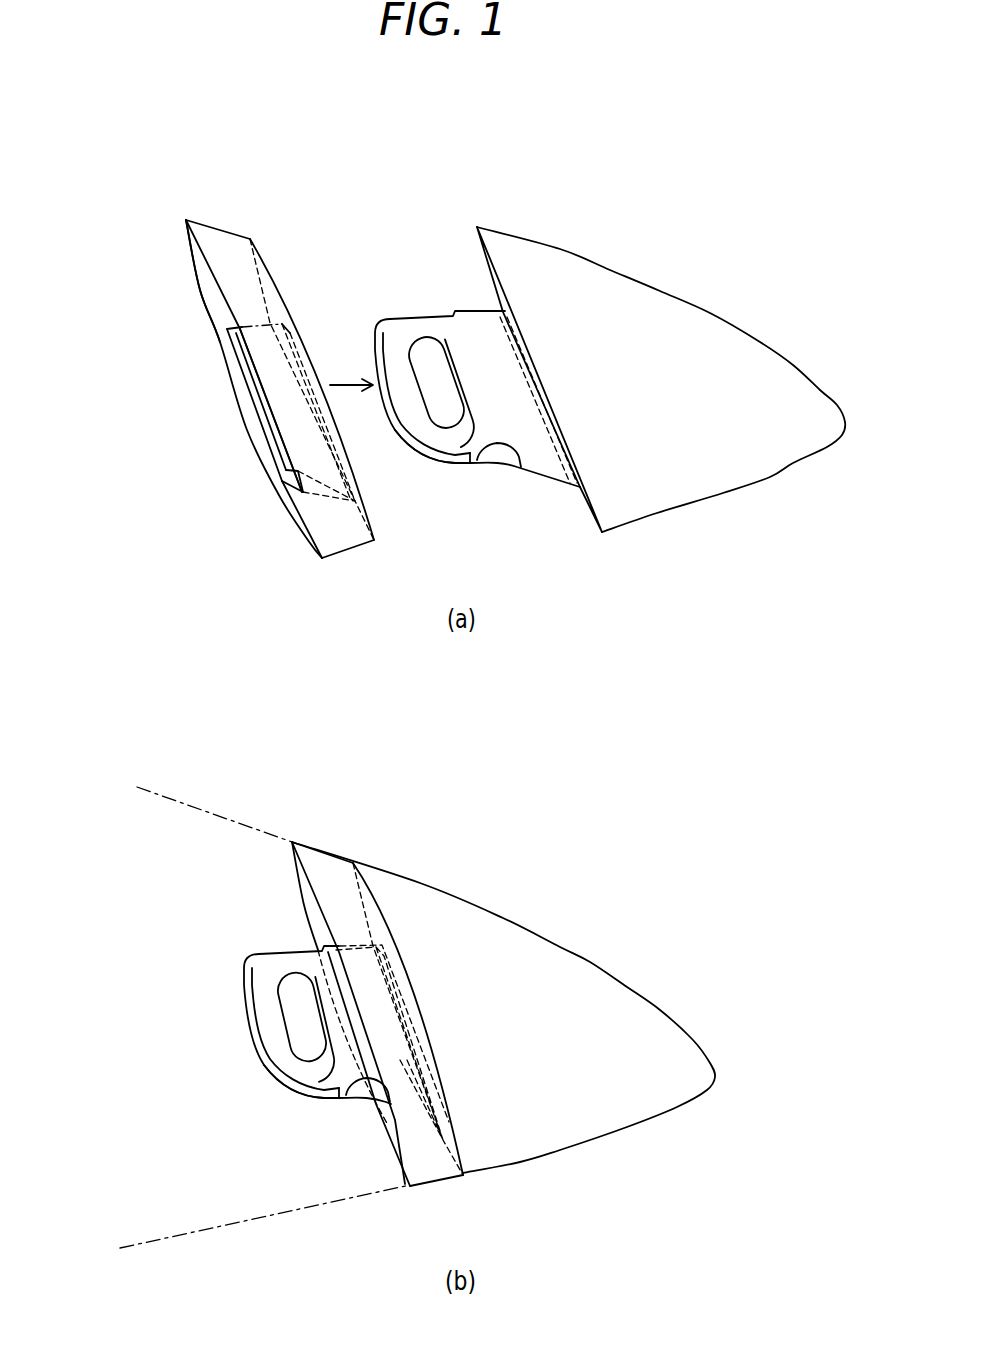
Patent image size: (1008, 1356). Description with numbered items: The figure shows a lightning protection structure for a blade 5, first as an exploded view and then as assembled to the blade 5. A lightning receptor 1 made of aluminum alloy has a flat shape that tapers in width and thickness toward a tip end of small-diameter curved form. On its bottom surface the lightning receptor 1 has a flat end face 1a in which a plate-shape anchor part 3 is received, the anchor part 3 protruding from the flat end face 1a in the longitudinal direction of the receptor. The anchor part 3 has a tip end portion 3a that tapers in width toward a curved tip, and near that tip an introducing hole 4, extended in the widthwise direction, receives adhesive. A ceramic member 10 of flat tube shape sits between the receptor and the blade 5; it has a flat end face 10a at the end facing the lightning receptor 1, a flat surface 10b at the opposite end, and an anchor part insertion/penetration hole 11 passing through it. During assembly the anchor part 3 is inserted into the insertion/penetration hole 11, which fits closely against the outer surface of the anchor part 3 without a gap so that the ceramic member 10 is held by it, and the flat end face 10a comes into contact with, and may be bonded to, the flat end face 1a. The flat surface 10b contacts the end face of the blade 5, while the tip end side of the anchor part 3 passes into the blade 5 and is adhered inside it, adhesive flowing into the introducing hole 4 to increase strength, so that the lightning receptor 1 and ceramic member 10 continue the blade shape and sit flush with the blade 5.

The lightning receptor 1 is at (708, 255).
The flat end face 1a is at (480, 275).
The anchor part 3 is at (478, 308).
The tip end portion 3a is at (444, 452).
The introducing hole 4 is at (428, 362).
The blade 5 is at (188, 803).
The ceramic member 10 is at (228, 220).
The flat end face 10a is at (267, 277).
The flat surface 10b is at (210, 283).
The anchor part insertion/penetration hole 11 is at (275, 445).